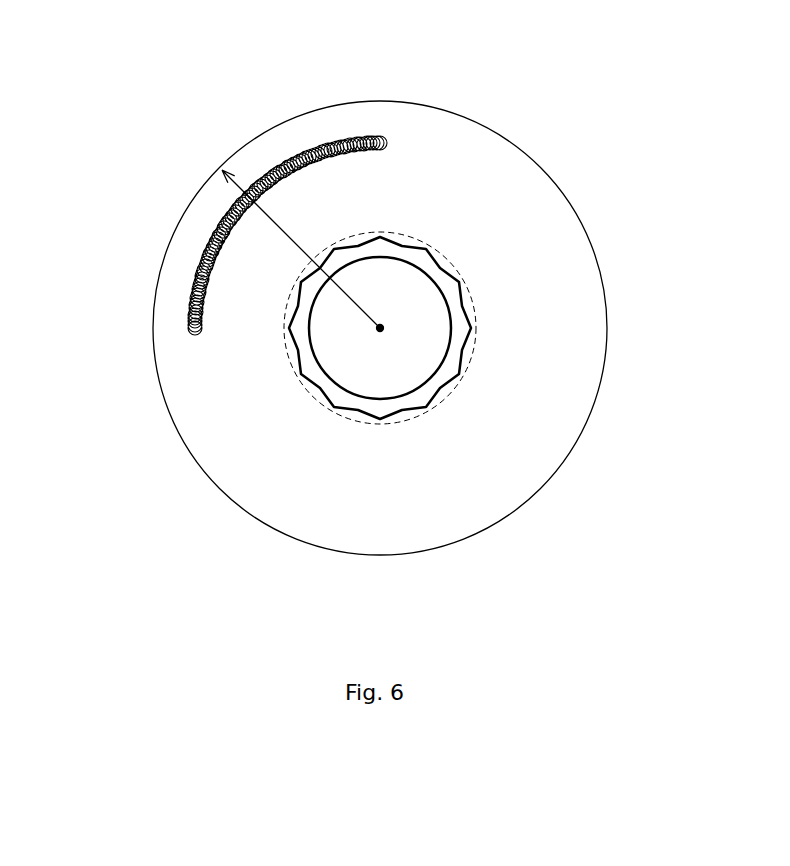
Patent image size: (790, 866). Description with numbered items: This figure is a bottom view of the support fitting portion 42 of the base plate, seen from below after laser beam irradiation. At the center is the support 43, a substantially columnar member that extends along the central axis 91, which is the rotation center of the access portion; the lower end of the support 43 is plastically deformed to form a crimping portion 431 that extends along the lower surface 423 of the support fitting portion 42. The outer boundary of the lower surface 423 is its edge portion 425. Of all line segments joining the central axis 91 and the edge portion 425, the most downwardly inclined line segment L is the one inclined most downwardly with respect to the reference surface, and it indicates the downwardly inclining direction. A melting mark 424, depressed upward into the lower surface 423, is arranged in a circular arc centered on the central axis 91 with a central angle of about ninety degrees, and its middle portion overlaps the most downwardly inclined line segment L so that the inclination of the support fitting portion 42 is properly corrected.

The support fitting portion 42 is at (413, 527).
The lower surface 423 is at (283, 493).
The melting mark 424 is at (357, 138).
The edge portion 425 is at (165, 407).
The support 43 is at (430, 240).
The crimping portion 431 is at (437, 390).
The central axis 91 is at (380, 328).
The most downwardly inclined line segment L is at (290, 235).